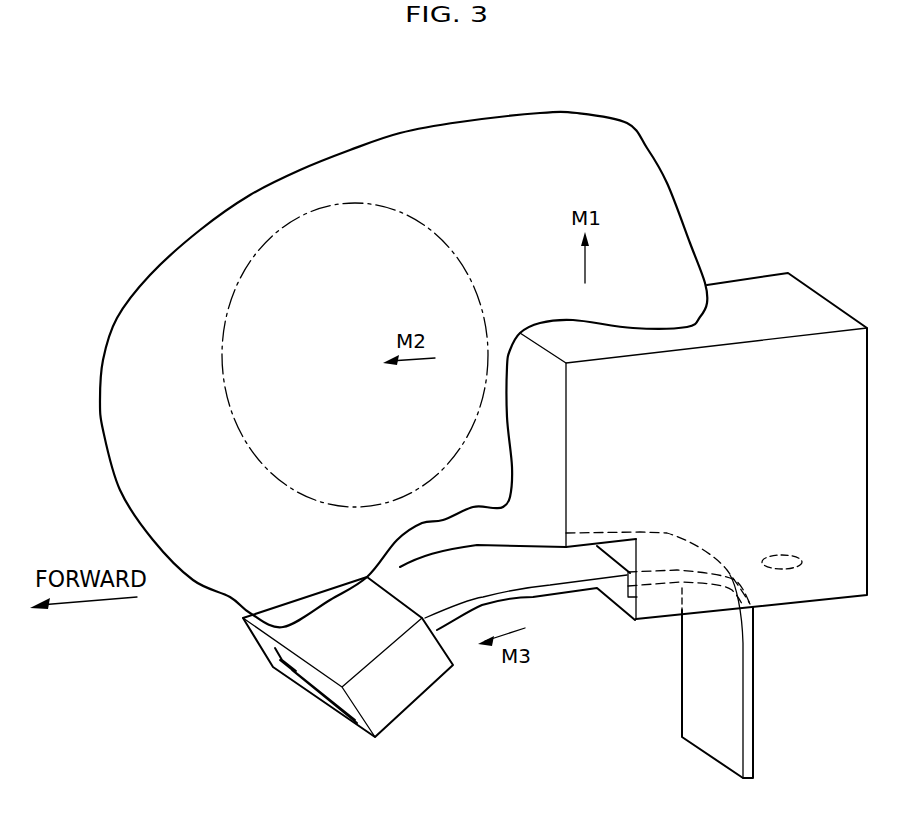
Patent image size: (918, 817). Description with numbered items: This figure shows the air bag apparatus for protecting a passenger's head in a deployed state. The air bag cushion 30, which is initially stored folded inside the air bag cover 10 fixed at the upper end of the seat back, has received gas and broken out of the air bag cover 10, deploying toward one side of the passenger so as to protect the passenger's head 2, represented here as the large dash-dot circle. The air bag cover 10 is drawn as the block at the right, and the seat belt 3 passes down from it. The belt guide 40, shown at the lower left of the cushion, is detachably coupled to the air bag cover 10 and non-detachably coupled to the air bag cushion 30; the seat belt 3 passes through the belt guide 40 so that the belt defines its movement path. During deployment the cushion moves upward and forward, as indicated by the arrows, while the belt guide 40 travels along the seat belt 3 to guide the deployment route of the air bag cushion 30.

The passenger's head 2 is at (311, 213).
The seat belt 3 is at (745, 717).
The air bag cover 10 is at (765, 285).
The air bag cushion 30 is at (200, 228).
The belt guide 40 is at (395, 705).